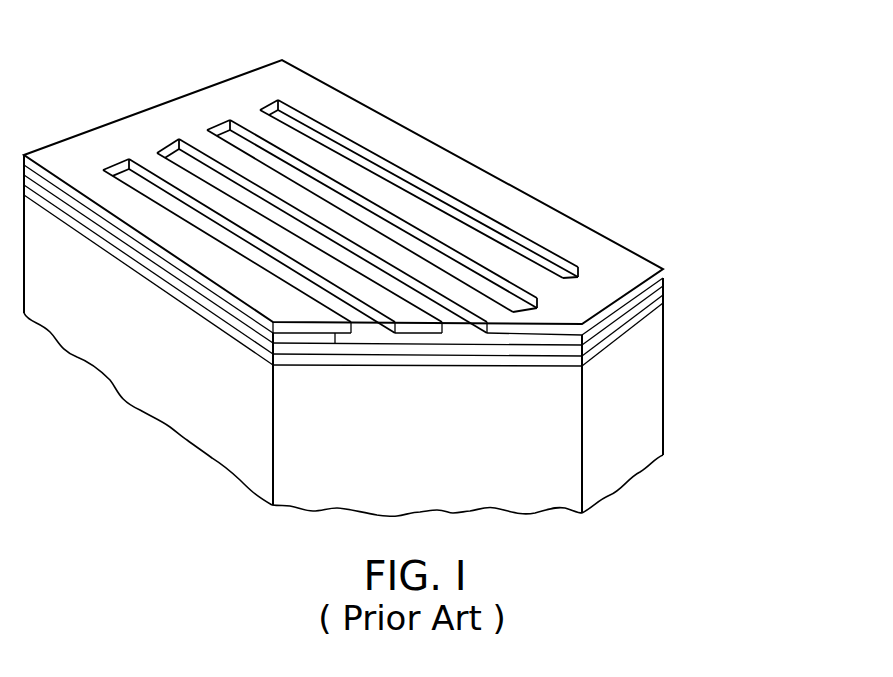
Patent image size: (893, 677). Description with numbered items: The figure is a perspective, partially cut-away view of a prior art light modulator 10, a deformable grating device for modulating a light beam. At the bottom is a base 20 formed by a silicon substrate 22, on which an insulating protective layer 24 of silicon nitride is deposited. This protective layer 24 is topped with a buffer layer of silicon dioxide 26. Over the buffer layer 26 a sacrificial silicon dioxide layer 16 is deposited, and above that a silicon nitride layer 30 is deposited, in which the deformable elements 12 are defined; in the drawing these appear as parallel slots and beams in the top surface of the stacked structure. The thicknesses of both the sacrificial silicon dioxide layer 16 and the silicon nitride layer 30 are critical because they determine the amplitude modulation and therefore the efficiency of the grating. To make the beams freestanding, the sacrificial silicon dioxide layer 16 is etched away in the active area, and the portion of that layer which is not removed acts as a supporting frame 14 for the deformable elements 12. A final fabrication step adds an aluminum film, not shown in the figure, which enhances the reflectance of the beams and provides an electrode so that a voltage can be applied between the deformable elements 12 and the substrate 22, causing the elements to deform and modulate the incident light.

The light modulator 10 is at (445, 273).
The deformable elements 12 is at (160, 167).
The supporting frame 14 is at (343, 187).
The silicon nitride layer 30 is at (625, 268).
The sacrificial silicon dioxide layer 16 is at (666, 281).
The buffer layer of silicon dioxide 26 is at (667, 293).
The insulating protective layer 24 is at (667, 300).
The base 20 is at (445, 335).
The silicon substrate 22 is at (615, 460).